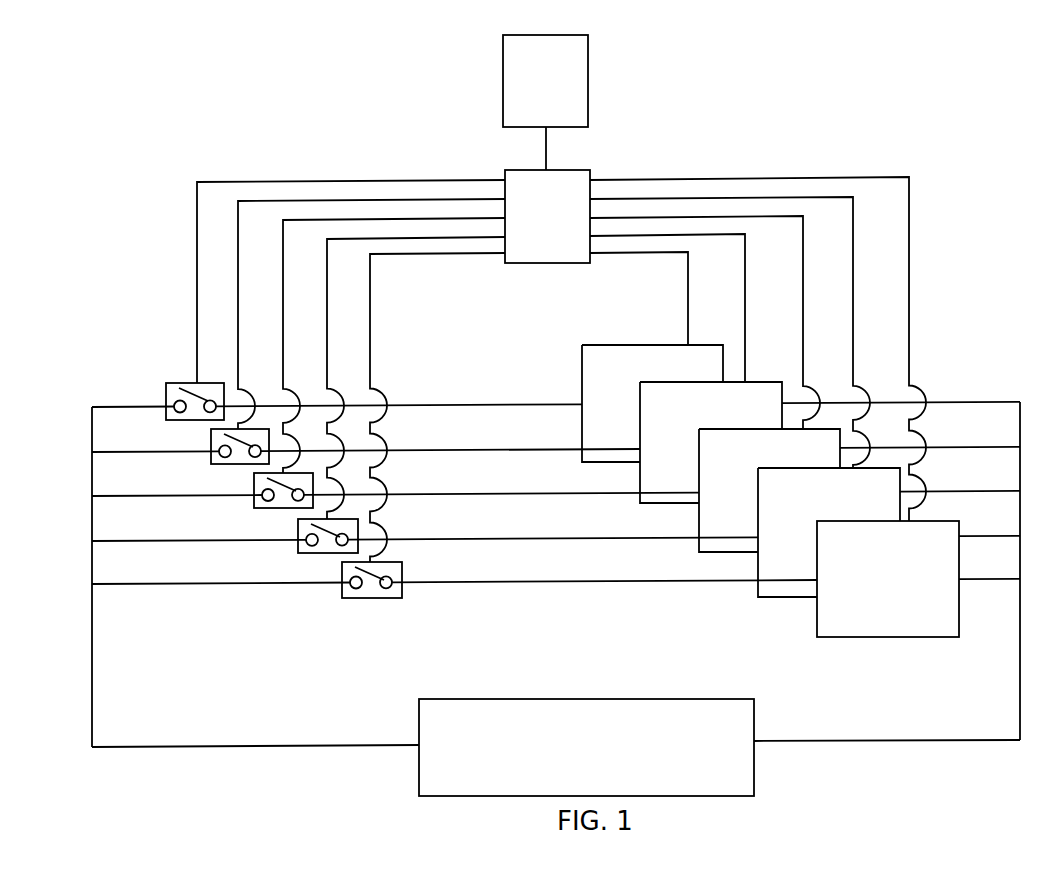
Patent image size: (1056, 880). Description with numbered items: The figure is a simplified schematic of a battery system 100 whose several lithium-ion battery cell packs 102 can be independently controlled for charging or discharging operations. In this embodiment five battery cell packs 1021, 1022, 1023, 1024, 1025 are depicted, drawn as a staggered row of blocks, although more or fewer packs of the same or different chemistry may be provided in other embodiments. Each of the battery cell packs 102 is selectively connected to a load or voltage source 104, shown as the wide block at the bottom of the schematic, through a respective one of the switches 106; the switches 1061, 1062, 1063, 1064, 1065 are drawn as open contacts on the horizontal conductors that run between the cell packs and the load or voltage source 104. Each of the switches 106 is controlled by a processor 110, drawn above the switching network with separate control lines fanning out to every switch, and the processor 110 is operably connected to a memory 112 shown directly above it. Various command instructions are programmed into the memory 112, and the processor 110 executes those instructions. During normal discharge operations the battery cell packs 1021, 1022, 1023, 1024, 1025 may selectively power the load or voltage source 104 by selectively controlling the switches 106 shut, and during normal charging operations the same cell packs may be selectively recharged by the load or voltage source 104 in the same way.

The battery system 100 is at (952, 127).
The lithium-ion battery cell packs 102 is at (770, 491).
The first battery cell pack 1021 is at (888, 579).
The second battery cell pack 1022 is at (829, 532).
The third battery cell pack 1023 is at (769, 490).
The fourth battery cell pack 1024 is at (711, 442).
The fifth battery cell pack 1025 is at (652, 403).
The load or voltage source 104 is at (754, 731).
The switches 106 is at (248, 506).
The first switch 1061 is at (342, 595).
The second switch 1062 is at (298, 548).
The third switch 1063 is at (254, 505).
The fourth switch 1064 is at (211, 460).
The fifth switch 1065 is at (166, 412).
The processor 110 is at (590, 168).
The memory 112 is at (588, 52).